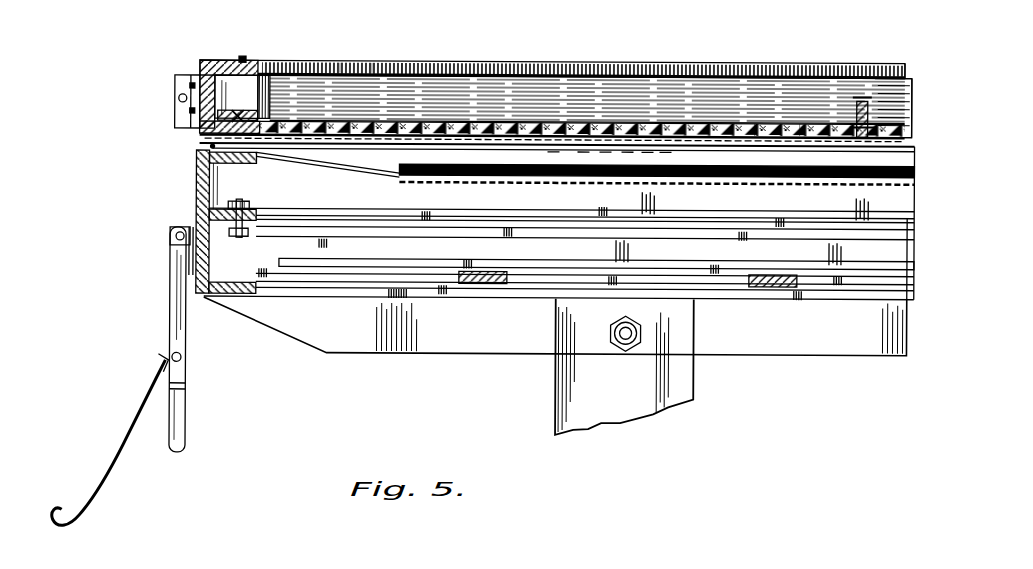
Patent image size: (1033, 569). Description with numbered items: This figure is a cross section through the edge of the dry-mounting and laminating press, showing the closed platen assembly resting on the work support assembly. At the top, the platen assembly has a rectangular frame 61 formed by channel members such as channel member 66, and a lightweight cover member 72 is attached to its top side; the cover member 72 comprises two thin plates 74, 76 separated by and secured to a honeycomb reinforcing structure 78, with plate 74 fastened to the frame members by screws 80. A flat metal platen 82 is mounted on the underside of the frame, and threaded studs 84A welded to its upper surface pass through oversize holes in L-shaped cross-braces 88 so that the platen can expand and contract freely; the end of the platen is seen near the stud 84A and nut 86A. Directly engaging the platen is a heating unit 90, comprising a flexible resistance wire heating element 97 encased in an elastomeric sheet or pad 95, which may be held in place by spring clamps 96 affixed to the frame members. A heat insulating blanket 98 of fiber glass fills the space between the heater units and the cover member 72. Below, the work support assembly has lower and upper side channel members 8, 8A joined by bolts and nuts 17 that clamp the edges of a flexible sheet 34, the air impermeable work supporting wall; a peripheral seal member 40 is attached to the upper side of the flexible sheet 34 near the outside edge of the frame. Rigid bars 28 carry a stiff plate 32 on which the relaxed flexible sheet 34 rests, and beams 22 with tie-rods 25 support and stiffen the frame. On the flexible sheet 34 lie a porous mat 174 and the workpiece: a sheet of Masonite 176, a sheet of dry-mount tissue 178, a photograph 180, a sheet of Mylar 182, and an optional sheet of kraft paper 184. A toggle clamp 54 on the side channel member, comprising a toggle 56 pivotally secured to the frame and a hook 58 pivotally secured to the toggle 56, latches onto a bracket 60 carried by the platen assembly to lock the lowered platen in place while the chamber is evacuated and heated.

The bracket 60 is at (182, 80).
The channel member 66 is at (207, 72).
The rectangular frame 61 is at (220, 54).
The screw 80 is at (244, 60).
The spring clamp 96 is at (273, 63).
The cover member 72 is at (318, 54).
The thin plate 74 is at (347, 61).
The thin plate 76 is at (378, 64).
The honeycomb reinforcing structure 78 is at (408, 62).
The heat insulating blanket 98 is at (440, 100).
The porous mat 174 is at (553, 152).
The sheet of Masonite 176 is at (583, 152).
The sheet of dry-mount tissue 178 is at (605, 152).
The photograph 180 is at (627, 152).
The sheet of Mylar 182 is at (647, 152).
The sheet of kraft paper 184 is at (665, 152).
The heating unit 90 is at (717, 121).
The resistance wire heating element 97 is at (765, 138).
The elastomeric sheet or pad 95 is at (800, 133).
The cross-brace 88 is at (838, 66).
The threaded stud 84A is at (861, 100).
The end block 86A is at (879, 90).
The flat metal platen 82 is at (205, 137).
The peripheral seal member 40 is at (212, 148).
The flexible sheet 34 is at (355, 180).
The channel member 8A is at (197, 183).
The bolts and nuts 17 is at (240, 212).
The plate 32 is at (341, 262).
The rigid bar 28 is at (467, 282).
The beam 22 is at (480, 345).
The tie-rod 25 is at (625, 343).
The channel member 8 is at (183, 240).
The toggle clamp 54 is at (162, 302).
The toggle 56 is at (174, 350).
The hook 58 is at (150, 406).